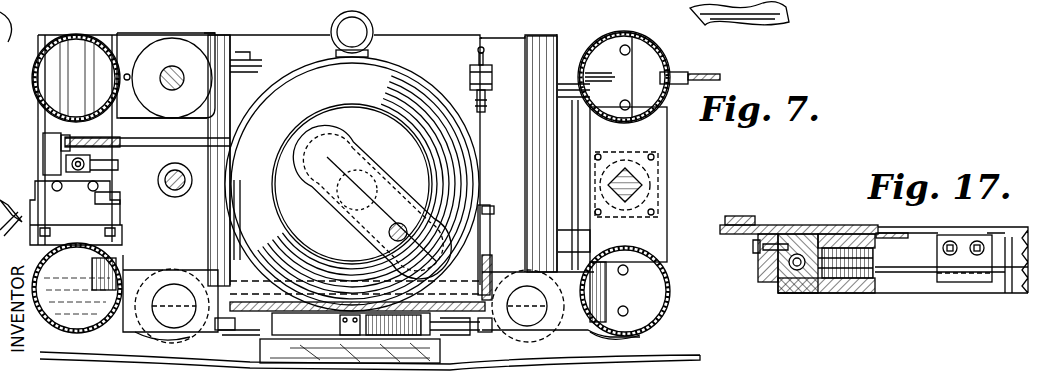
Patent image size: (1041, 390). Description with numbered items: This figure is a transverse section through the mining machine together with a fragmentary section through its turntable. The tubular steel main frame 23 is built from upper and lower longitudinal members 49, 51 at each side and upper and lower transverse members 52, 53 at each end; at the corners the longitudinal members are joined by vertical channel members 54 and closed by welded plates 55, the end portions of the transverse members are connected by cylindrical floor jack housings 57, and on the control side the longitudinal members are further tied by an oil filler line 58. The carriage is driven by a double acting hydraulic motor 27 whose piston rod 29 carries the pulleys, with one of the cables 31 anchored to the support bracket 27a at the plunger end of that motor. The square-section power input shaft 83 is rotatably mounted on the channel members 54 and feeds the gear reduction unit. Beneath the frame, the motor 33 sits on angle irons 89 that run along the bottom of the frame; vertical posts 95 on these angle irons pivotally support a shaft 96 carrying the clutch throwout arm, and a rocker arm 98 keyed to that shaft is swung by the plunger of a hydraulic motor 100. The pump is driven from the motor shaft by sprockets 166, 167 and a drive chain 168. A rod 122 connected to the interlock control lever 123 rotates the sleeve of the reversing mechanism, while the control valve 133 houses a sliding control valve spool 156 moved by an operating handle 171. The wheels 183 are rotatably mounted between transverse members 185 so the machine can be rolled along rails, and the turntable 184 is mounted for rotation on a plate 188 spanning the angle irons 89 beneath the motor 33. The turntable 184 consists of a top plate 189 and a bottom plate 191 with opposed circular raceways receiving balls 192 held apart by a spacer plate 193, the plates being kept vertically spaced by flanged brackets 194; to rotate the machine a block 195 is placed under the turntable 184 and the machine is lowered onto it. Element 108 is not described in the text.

In FIG. 7, the main frame 23 is at (450, 37).
In FIG. 7, the hydraulic motor 27 is at (168, 44).
In FIG. 7, the support bracket 27a is at (127, 46).
In FIG. 7, the piston rod 29 is at (178, 72).
In FIG. 7, the cables 31 is at (235, 58).
In FIG. 7, the motor 33 is at (474, 178).
In FIG. 7, the upper longitudinal member 49 is at (34, 66).
In FIG. 7, the lower longitudinal member 51 is at (58, 330).
In FIG. 7, the upper transverse member 52 is at (402, 50).
In FIG. 7, the lower transverse member 53 is at (436, 320).
In FIG. 7, the vertical channel members 54 is at (666, 147).
In FIG. 7, the plates 55 is at (625, 36).
In FIG. 7, the floor jack housings 57 is at (213, 38).
In FIG. 7, the oil filler line 58 is at (70, 30).
In FIG. 7, the power input shaft 83 is at (640, 190).
In FIG. 7, the angle irons 89 is at (352, 337).
In FIG. 17, the angle irons 89 is at (738, 215).
In FIG. 7, the vertical posts 95 is at (233, 238).
In FIG. 7, the shaft 96 is at (492, 211).
In FIG. 7, the rocker arm 98 is at (488, 264).
In FIG. 7, the hydraulic motor 100 is at (492, 282).
In FIG. 7, the wheel face 108 is at (228, 268).
In FIG. 7, the rod 122 is at (155, 140).
In FIG. 7, the interlock control lever 123 is at (61, 218).
In FIG. 7, the control valve 133 is at (120, 198).
In FIG. 7, the control valve spool 156 is at (24, 178).
In FIG. 7, the sprocket 166 is at (336, 239).
In FIG. 7, the sprocket 167 is at (388, 152).
In FIG. 7, the drive chain 168 is at (330, 216).
In FIG. 7, the operating handle 171 is at (2, 160).
In FIG. 7, the wheels 183 is at (154, 336).
In FIG. 7, the turntable 184 is at (320, 318).
In FIG. 17, the turntable 184 is at (935, 304).
In FIG. 7, the transverse members 185 is at (140, 270).
In FIG. 7, the plate 188 is at (330, 306).
In FIG. 17, the plate 188 is at (776, 225).
In FIG. 7, the top plate 189 is at (372, 310).
In FIG. 17, the top plate 189 is at (838, 234).
In FIG. 7, the bottom plate 191 is at (310, 338).
In FIG. 17, the bottom plate 191 is at (850, 292).
In FIG. 17, the balls 192 is at (797, 271).
In FIG. 17, the spacer plate 193 is at (825, 286).
In FIG. 7, the flanged brackets 194 is at (248, 330).
In FIG. 17, the flanged brackets 194 is at (757, 266).
In FIG. 7, the block 195 is at (459, 339).